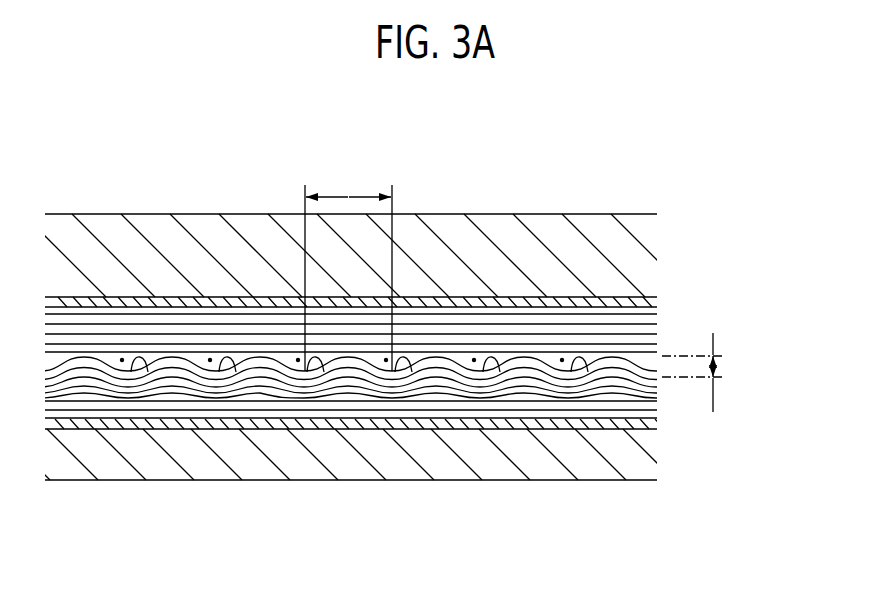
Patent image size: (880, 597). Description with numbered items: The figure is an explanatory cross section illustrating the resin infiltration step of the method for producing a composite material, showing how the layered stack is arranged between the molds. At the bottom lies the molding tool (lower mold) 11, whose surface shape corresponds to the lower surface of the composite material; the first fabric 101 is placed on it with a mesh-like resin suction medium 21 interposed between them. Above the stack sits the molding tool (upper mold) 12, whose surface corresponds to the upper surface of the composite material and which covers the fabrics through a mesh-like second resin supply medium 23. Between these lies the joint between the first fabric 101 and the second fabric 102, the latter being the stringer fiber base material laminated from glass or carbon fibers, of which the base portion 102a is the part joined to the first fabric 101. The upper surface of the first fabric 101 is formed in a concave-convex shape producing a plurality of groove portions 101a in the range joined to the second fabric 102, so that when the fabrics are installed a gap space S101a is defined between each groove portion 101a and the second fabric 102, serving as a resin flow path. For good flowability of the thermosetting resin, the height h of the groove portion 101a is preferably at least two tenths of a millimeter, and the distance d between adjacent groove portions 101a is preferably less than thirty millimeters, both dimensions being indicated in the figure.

The molding tool (upper mold) 12 is at (107, 213).
The second resin supply medium 23 is at (587, 300).
The second fabric 102 is at (437, 296).
The base portion 102a is at (667, 318).
The first fabric 101 is at (667, 404).
The groove portion 101a is at (317, 358).
The gap space (resin flow path) S101a is at (562, 360).
The resin suction medium 21 is at (592, 420).
The molding tool (lower mold) 11 is at (338, 472).
The distance (disposition interval) between groove portions d is at (348, 268).
The height (depth) of groove portion h is at (702, 372).